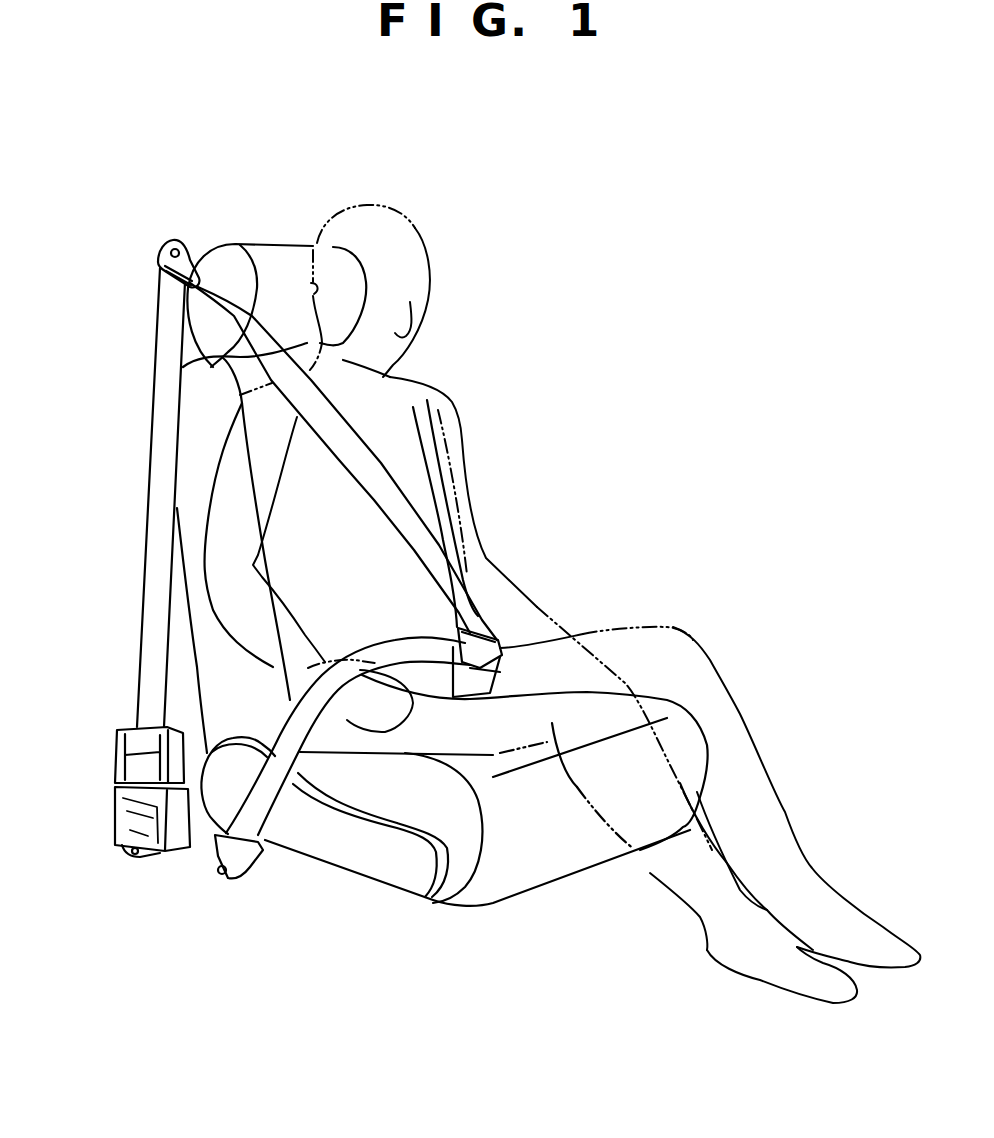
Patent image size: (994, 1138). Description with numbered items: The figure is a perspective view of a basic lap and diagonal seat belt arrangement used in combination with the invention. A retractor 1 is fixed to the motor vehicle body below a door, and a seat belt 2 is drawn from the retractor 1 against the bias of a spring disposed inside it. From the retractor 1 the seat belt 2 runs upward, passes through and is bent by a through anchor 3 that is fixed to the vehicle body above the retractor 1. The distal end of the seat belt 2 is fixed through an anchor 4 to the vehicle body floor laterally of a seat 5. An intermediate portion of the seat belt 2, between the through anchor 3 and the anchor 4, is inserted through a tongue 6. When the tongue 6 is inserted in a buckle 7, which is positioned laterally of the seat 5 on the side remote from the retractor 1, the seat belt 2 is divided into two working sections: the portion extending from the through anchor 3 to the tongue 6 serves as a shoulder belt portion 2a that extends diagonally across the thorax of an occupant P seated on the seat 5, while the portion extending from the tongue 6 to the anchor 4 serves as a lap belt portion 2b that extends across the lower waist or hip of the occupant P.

The retractor 1 is at (117, 801).
The seat belt 2 is at (143, 495).
The shoulder belt portion 2a is at (370, 468).
The lap belt portion 2b is at (293, 748).
The through anchor 3 is at (193, 248).
The anchor 4 is at (219, 872).
The seat 5 is at (527, 863).
The tongue 6 is at (507, 648).
The buckle 7 is at (503, 673).
The occupant P is at (428, 228).